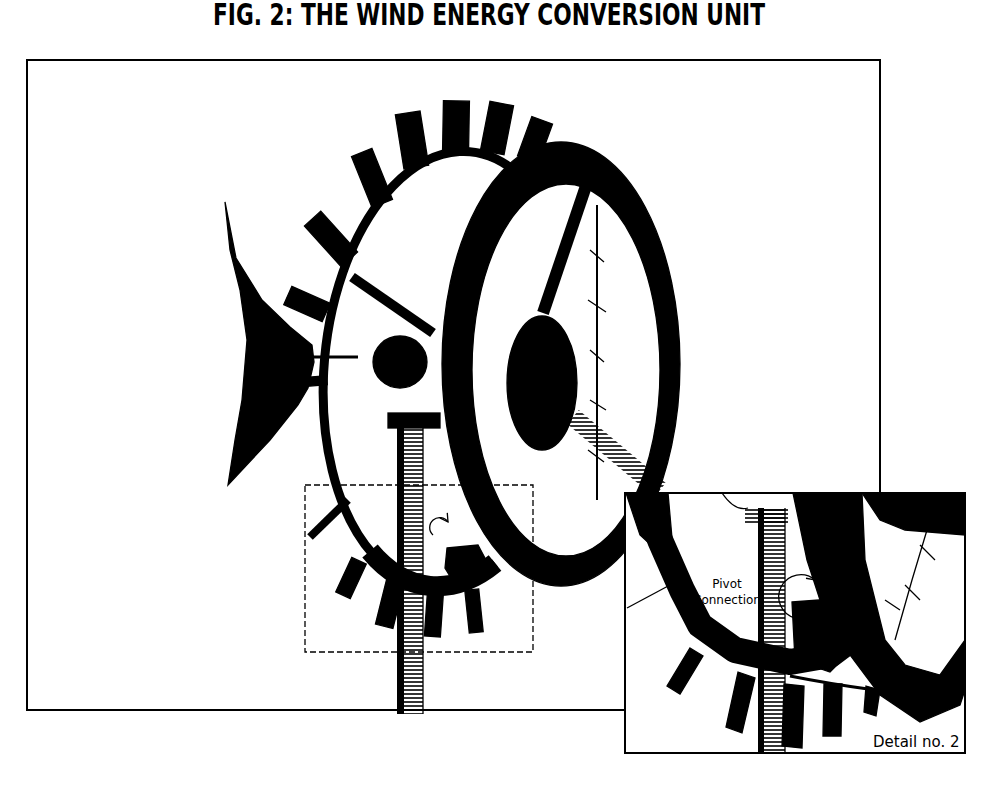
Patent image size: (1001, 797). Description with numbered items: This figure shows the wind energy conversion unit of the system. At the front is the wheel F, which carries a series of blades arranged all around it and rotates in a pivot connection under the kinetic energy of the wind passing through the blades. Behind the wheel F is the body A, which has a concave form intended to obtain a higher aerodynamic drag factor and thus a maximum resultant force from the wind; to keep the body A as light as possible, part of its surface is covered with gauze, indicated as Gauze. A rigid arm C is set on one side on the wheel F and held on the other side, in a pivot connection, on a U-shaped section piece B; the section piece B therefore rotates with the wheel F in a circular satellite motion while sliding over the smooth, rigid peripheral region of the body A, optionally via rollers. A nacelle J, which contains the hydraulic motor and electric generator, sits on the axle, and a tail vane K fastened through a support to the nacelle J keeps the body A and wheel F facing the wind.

The wheel F is at (366, 217).
The body A is at (671, 252).
The tail vane K is at (236, 327).
The nacelle J is at (367, 408).
The rigid arm C is at (390, 573).
The U-shaped section piece B is at (493, 563).
The gauze Gauze is at (532, 257).